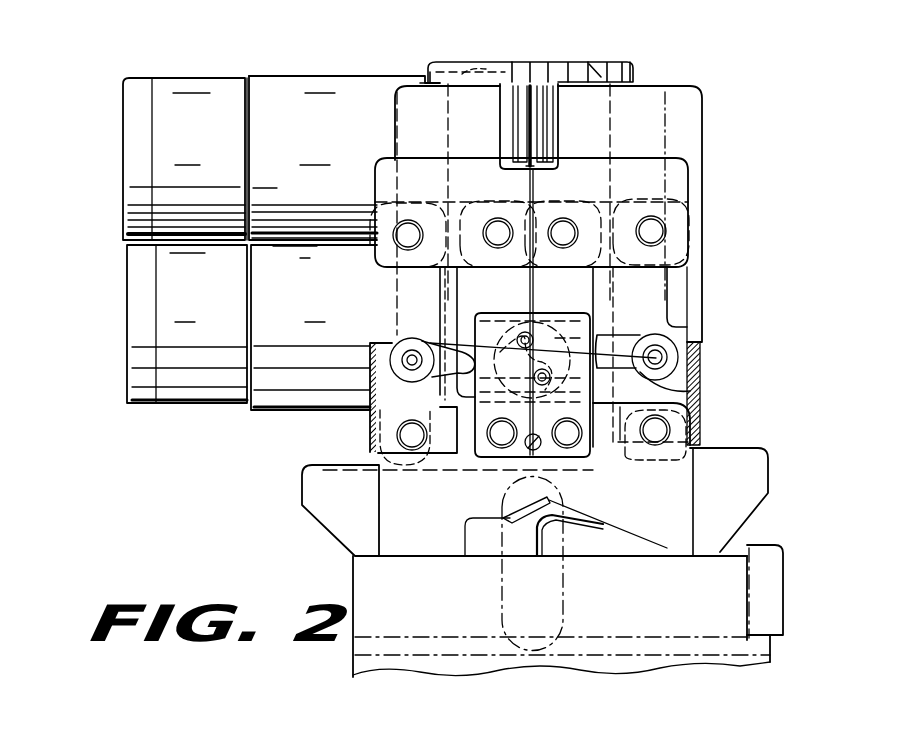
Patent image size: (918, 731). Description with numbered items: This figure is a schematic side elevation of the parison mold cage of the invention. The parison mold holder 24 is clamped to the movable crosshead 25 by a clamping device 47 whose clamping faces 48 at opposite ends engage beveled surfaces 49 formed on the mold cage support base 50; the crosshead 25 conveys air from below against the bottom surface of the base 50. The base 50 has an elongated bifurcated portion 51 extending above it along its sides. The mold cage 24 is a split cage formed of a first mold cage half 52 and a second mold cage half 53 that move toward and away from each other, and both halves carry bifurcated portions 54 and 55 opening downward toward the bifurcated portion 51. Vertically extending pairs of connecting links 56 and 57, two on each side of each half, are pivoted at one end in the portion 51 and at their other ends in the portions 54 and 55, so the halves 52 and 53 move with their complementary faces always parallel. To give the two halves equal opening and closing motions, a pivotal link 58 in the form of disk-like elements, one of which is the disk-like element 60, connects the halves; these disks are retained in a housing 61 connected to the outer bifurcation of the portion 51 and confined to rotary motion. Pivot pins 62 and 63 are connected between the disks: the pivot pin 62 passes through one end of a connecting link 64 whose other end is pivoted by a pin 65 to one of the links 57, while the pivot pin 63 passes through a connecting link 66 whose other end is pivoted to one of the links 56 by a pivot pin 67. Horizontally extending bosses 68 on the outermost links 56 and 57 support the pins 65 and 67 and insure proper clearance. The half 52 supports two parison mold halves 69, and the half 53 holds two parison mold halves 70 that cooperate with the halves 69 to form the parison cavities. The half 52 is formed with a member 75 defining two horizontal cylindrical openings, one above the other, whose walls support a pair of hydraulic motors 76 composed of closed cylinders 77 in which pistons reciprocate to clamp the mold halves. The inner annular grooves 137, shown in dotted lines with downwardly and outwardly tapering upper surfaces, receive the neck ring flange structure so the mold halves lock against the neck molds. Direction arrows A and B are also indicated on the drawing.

The parison mold holder 24 is at (715, 117).
The movable crosshead 25 is at (785, 563).
The clamping device 47 is at (505, 590).
The clamping faces 48 is at (530, 507).
The beveled surfaces 49 is at (510, 518).
The mold cage support base 50 is at (318, 497).
The bifurcated portion 51 is at (683, 452).
The first mold cage half 52 is at (415, 107).
The second mold cage half 53 is at (645, 108).
The bifurcated portion 54 is at (382, 183).
The bifurcated portion 55 is at (682, 184).
The connecting links 56 is at (388, 283).
The connecting links 57 is at (677, 287).
The pivotal link 58 is at (574, 304).
The disk-like element 60 is at (567, 342).
The housing 61 is at (583, 448).
The pivot pin 62 is at (525, 330).
The pivot pin 63 is at (513, 332).
The connecting link 64 is at (690, 391).
The pin 65 is at (660, 358).
The connecting link 66 is at (438, 378).
The pivot pin 67 is at (405, 360).
The bosses 68 is at (403, 340).
The parison mold halves 69 is at (445, 70).
The parison mold halves 70 is at (616, 68).
The member 75 is at (316, 90).
The hydraulic motors 76 is at (112, 106).
The closed cylinders 77 is at (162, 131).
The inner annular grooves 137 is at (488, 70).
The direction A is at (112, 243).
The direction B is at (718, 165).